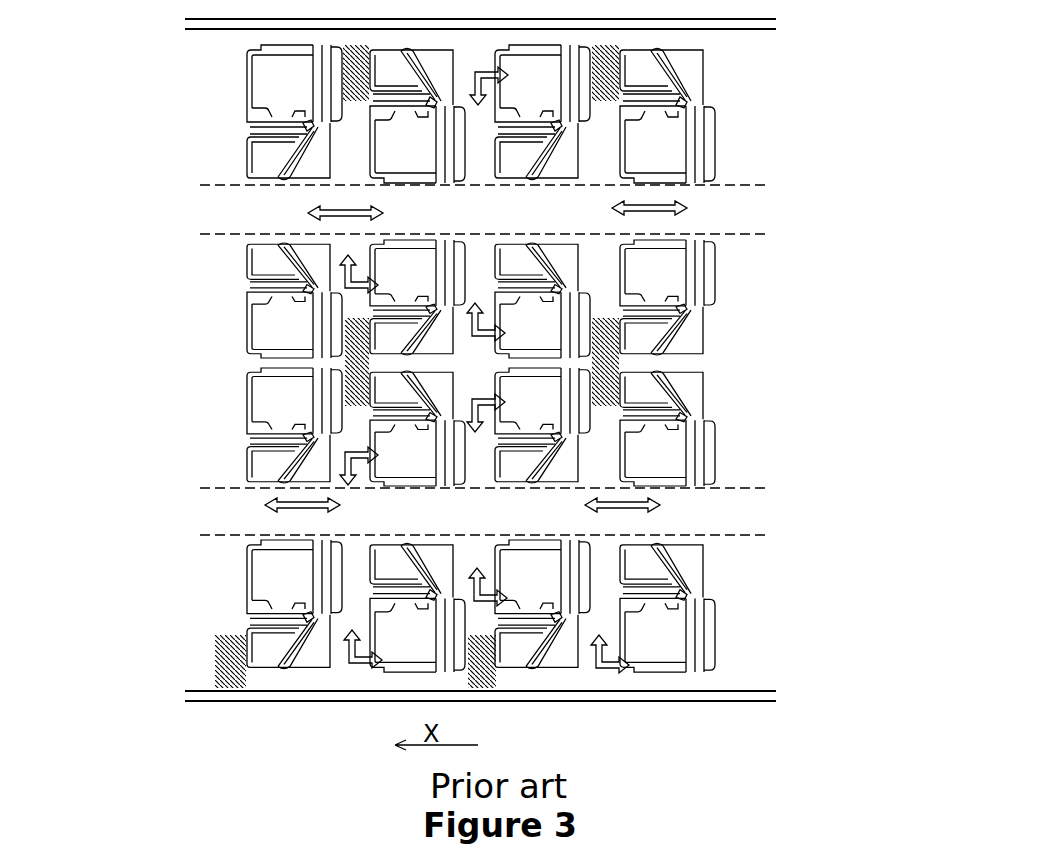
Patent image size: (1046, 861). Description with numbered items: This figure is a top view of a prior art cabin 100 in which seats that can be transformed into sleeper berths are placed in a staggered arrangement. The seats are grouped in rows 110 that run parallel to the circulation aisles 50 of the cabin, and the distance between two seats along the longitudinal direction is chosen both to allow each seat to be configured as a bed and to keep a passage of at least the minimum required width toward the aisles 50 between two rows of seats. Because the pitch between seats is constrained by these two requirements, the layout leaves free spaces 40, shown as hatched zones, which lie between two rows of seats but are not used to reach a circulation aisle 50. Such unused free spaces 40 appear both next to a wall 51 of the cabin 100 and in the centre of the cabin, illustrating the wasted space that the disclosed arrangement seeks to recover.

The cabin 100 is at (146, 307).
The row 110 is at (739, 137).
The free space 40 is at (227, 643).
The circulation aisle 50 is at (556, 222).
The wall 51 is at (725, 30).